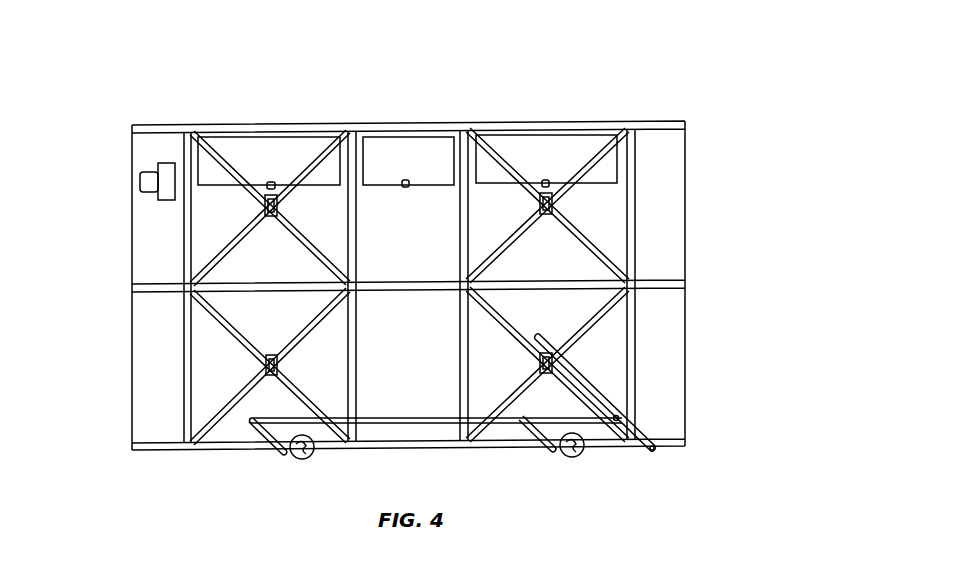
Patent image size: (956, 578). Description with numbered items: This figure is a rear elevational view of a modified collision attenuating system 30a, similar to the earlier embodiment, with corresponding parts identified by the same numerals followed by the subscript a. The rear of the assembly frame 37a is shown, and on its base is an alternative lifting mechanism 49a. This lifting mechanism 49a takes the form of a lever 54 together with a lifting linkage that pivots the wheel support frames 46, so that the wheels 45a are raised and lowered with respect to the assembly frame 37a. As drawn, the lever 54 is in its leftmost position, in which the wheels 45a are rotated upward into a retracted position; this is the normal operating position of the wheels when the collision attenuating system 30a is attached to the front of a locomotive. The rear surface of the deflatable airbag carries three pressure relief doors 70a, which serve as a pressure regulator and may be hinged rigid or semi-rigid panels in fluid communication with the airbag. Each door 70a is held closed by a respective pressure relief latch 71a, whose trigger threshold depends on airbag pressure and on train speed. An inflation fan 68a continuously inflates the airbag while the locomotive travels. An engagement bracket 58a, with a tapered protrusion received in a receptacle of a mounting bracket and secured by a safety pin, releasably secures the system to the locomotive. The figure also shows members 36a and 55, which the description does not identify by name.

The collision attenuating system 30a is at (654, 106).
The side frame member 36a is at (685, 155).
The assembly frame 37a is at (184, 250).
The inflation fan 68a is at (145, 177).
The pressure relief door 70a is at (265, 152).
The pressure relief latch 71a is at (278, 186).
The engagement bracket 58a is at (266, 362).
The horizontal bar 55 is at (425, 423).
The wheel support frame 46 is at (275, 453).
The wheel 45a is at (310, 459).
The lever 54 is at (572, 367).
The lifting mechanism 49a is at (628, 418).